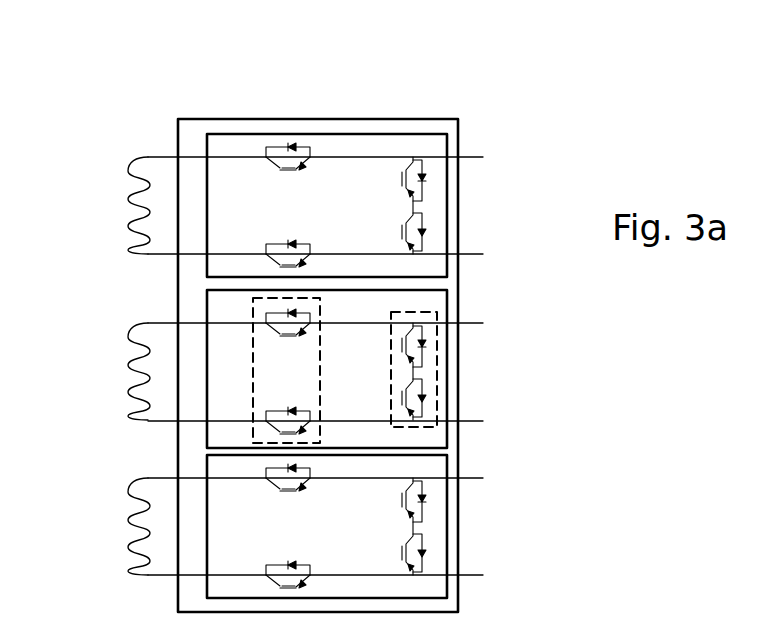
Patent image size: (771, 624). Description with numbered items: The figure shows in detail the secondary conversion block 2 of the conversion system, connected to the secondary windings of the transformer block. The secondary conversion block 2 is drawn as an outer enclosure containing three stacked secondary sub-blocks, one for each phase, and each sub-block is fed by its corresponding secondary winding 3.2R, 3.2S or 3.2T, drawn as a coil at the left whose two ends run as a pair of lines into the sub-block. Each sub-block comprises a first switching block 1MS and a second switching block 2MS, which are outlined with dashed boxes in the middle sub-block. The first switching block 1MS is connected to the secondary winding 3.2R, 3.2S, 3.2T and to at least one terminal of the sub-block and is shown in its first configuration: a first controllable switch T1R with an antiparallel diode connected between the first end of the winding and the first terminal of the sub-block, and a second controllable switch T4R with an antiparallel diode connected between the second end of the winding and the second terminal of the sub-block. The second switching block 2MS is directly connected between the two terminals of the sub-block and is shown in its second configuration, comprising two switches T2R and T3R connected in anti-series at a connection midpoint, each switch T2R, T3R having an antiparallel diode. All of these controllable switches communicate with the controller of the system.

The secondary conversion block 2 is at (207, 118).
The secondary winding 3.2R is at (126, 205).
The secondary winding 3.2S is at (124, 372).
The secondary winding 3.2T is at (126, 530).
The first controllable switch T1R is at (289, 176).
The switch T2R is at (382, 216).
The switch T3R is at (395, 165).
The second controllable switch T4R is at (284, 234).
The first switching block 1MS is at (253, 309).
The second switching block 2MS is at (437, 350).